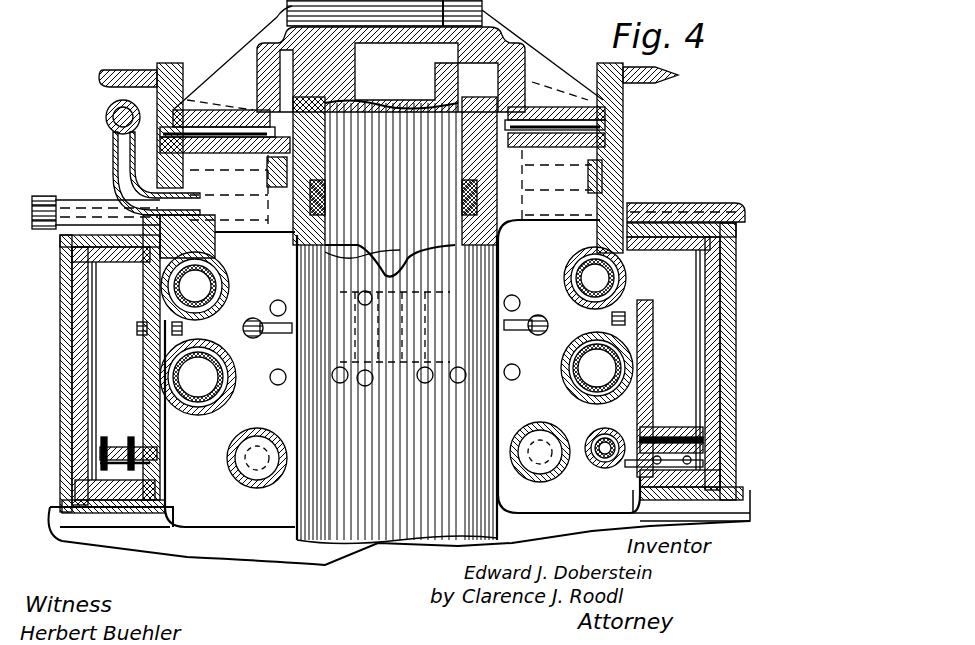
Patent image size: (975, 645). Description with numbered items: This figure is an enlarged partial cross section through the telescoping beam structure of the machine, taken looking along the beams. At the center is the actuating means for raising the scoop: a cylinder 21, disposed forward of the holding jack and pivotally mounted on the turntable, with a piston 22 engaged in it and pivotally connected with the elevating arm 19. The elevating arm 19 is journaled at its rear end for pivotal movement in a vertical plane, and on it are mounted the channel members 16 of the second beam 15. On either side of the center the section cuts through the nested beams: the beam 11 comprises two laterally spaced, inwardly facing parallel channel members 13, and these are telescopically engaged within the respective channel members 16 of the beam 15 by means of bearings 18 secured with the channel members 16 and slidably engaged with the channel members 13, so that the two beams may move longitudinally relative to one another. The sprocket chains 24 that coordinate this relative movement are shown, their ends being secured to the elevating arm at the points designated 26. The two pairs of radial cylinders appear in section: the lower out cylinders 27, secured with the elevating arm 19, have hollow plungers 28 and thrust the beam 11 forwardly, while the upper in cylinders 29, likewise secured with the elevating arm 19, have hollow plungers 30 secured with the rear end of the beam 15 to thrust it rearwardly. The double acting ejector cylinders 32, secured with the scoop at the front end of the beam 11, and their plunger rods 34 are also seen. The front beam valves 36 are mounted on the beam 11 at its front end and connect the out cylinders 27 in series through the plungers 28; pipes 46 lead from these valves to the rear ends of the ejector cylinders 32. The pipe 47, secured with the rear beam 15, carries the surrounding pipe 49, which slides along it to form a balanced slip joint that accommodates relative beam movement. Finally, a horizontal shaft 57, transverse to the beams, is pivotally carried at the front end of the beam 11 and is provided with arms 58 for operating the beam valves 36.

The beam 11 is at (95, 318).
The channel members 13 is at (94, 392).
The second beam 15 is at (88, 360).
The channel members 16 is at (62, 332).
The bearings 18 is at (747, 476).
The elevating arm 19 is at (625, 140).
The cylinder 21 is at (300, 283).
The piston 22 is at (398, 94).
The sprocket chains 24 is at (120, 440).
The chain end securement to elevating arm 26 is at (160, 455).
The out cylinders 27 is at (228, 400).
The hollow plungers 28 is at (222, 416).
The in cylinders 29 is at (222, 300).
The plungers 30 is at (215, 260).
The double acting cylinders 32 is at (248, 486).
The plunger rods 34 is at (259, 470).
The front beam valves 36 is at (385, 388).
The pipes 46 is at (243, 328).
The pipe 47 is at (607, 460).
The pipe 49 is at (596, 468).
The horizontal shafts 57 is at (42, 232).
The arms 58 is at (372, 283).